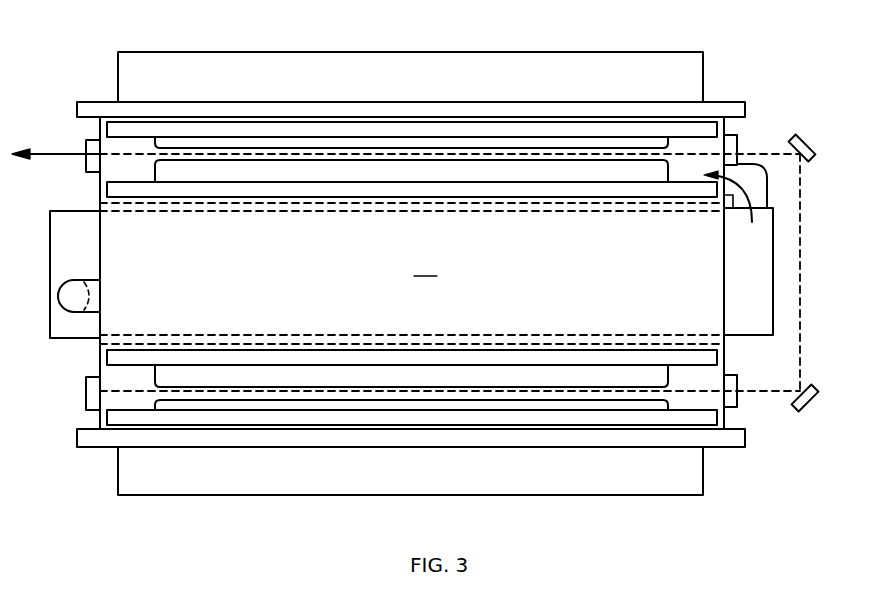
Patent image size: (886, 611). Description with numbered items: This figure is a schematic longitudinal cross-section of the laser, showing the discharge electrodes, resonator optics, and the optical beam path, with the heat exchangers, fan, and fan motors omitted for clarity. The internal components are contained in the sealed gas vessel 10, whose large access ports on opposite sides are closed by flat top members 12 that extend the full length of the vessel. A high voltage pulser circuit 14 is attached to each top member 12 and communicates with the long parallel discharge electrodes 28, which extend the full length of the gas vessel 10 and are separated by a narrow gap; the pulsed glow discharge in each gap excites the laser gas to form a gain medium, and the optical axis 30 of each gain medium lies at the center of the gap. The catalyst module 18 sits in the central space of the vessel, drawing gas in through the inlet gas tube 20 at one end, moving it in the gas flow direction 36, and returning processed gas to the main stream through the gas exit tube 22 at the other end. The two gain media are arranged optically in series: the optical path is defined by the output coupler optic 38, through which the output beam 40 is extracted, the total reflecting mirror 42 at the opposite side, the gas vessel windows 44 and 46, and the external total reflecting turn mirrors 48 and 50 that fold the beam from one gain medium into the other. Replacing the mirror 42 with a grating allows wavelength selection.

The gas vessel 10 is at (101, 351).
The top member 12 is at (91, 101).
The high voltage pulser circuit 14 is at (651, 52).
The catalyst module 18 is at (426, 265).
The inlet gas tube 20 is at (58, 296).
The gas exit tube 22 is at (768, 180).
The discharge electrodes 28 is at (475, 167).
The optical axis 30 is at (800, 287).
The gas flow direction 36 is at (754, 193).
The output coupler optic 38 is at (86, 147).
The output beam 40 is at (42, 160).
The total reflecting mirror 42 is at (86, 393).
The gas vessel window 44 is at (738, 147).
The gas vessel window 46 is at (738, 400).
The external total reflecting turn mirror 48 is at (808, 410).
The external total reflecting turn mirror 50 is at (814, 138).